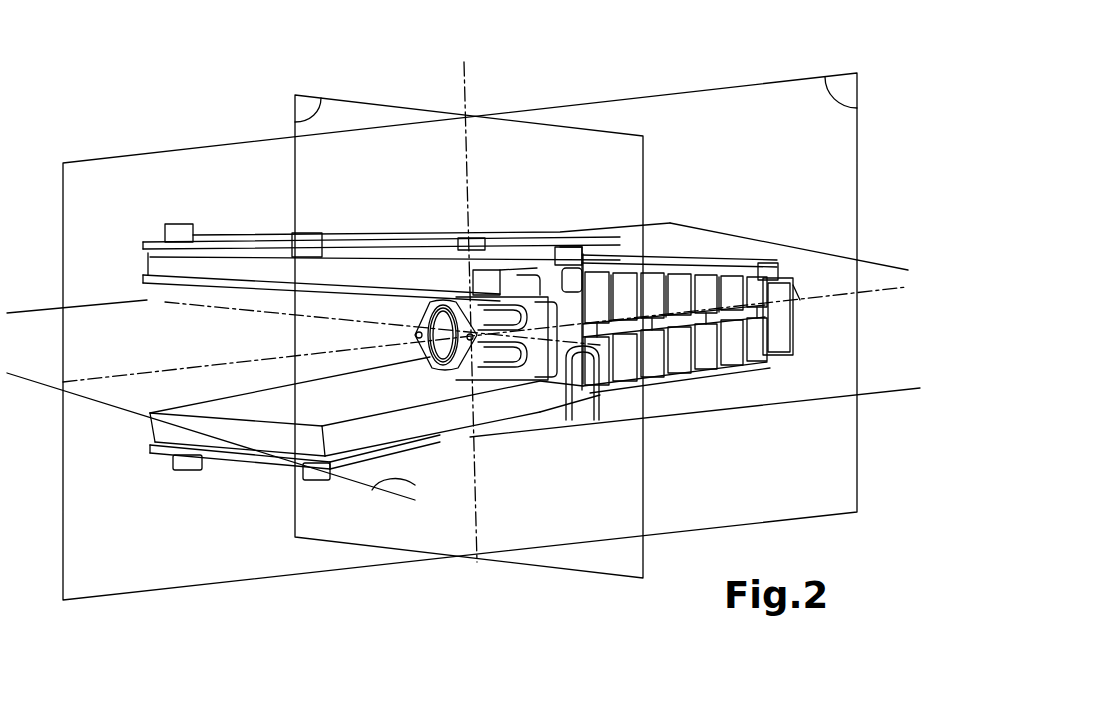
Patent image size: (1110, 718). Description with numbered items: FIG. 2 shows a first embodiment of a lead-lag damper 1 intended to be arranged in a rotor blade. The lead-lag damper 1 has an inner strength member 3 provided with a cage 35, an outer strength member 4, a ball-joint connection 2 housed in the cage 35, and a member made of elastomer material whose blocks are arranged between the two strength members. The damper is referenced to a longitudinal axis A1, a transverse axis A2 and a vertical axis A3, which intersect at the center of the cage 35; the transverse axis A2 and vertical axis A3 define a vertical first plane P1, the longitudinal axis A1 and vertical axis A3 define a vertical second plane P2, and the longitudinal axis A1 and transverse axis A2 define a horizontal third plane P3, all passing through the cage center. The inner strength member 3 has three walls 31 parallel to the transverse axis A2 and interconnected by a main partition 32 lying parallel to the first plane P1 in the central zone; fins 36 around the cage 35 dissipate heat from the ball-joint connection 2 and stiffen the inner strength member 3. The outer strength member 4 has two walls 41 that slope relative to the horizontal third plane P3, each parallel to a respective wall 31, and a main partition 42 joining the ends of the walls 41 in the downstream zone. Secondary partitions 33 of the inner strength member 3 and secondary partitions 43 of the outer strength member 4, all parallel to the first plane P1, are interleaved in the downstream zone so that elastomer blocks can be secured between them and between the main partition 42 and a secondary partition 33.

The lead-lag damper 1 is at (138, 524).
The ball-joint connection 2 is at (398, 355).
The inner strength member 3 is at (189, 315).
The wall 31 is at (262, 398).
The main partition 32 is at (487, 396).
The secondary partition 33 is at (598, 287).
The cage 35 is at (420, 313).
The fins 36 is at (413, 347).
The outer strength member 4 is at (220, 206).
The wall 41 is at (405, 240).
The main partition 42 is at (805, 315).
The secondary partition 43 is at (545, 282).
The vertical first plane P1 is at (305, 112).
The vertical second plane P2 is at (848, 91).
The horizontal third plane P3 is at (374, 489).
The longitudinal axis A1 is at (122, 378).
The transverse axis A2 is at (160, 302).
The vertical axis A3 is at (466, 74).